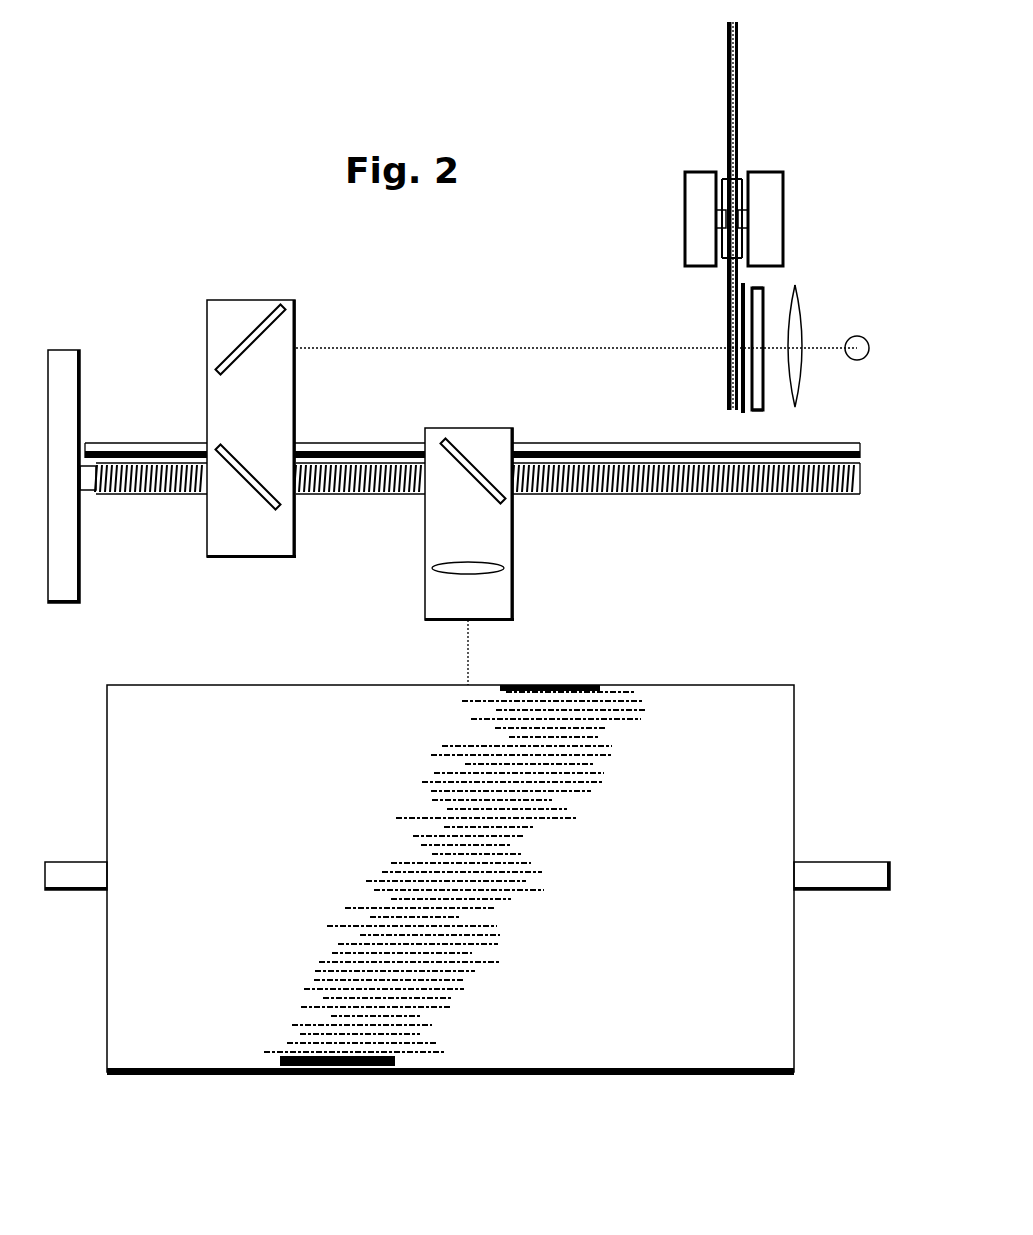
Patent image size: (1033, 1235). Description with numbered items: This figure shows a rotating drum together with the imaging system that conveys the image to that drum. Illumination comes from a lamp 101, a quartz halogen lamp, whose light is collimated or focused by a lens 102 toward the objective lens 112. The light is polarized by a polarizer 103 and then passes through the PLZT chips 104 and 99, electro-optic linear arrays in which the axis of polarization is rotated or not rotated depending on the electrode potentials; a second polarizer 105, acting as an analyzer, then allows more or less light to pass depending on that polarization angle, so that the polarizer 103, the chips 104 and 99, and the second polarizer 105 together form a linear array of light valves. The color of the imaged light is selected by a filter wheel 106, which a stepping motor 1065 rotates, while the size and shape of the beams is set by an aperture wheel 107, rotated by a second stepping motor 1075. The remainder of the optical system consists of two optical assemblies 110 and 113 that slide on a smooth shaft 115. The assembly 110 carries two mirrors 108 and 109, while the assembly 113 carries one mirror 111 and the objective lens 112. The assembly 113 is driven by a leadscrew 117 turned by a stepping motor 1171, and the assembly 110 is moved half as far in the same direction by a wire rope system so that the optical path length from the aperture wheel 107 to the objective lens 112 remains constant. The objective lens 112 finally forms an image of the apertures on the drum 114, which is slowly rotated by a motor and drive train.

The PLZT chip 99 is at (757, 288).
The lamp 101 is at (869, 345).
The lens 102 is at (797, 285).
The polarizer 103 is at (763, 412).
The PLZT chip 104 is at (752, 410).
The second polarizer 105 is at (735, 405).
The filter wheel 106 is at (738, 86).
The aperture wheel 107 is at (728, 110).
The mirror 108 is at (283, 302).
The mirror 109 is at (278, 510).
The optical assembly 110 is at (212, 300).
The mirror 111 is at (504, 503).
The objective lens 112 is at (505, 568).
The optical assembly 113 is at (432, 428).
The drum 114 is at (794, 688).
The smooth shaft 115 is at (860, 447).
The leadscrew 117 is at (862, 472).
The stepping motor 1065 is at (780, 172).
The stepping motor 1075 is at (686, 172).
The stepping motor 1171 is at (55, 350).